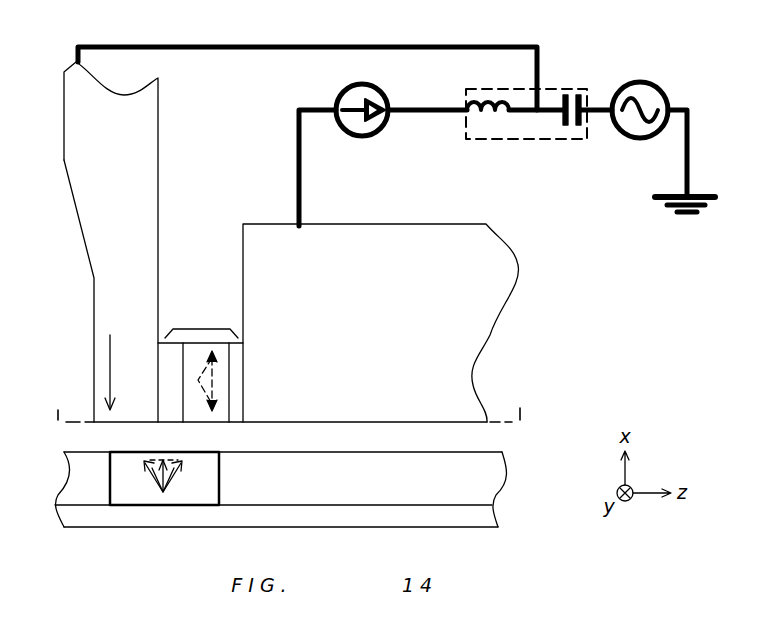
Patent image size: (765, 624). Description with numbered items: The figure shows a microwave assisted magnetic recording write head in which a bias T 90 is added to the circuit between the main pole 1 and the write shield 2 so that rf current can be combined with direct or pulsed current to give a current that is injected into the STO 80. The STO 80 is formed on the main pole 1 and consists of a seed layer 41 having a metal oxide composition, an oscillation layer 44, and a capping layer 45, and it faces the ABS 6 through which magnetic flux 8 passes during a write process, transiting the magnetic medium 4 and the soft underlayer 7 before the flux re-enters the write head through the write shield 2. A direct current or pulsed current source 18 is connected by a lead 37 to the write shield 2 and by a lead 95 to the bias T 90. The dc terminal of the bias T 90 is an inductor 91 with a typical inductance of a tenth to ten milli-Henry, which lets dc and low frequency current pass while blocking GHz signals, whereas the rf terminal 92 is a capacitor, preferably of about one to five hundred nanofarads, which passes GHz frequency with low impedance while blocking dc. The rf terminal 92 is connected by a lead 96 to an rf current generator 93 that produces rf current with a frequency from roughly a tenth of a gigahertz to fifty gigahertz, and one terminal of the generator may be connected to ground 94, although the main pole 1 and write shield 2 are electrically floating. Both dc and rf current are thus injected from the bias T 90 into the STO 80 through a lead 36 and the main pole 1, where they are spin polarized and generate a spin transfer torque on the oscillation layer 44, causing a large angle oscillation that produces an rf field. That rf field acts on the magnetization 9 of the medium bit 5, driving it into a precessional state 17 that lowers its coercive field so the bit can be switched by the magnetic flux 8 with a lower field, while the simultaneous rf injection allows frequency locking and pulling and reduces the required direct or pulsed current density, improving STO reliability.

The main pole 1 is at (92, 222).
The write shield 2 is at (470, 350).
The magnetic medium 4 is at (500, 475).
The medium bit 5 is at (173, 495).
The ABS 6 is at (290, 403).
The soft underlayer 7 is at (490, 512).
The magnetic flux 8 is at (110, 362).
The magnetization 9 is at (151, 494).
The precessional state 17 is at (188, 480).
The direct current or pulsed current source 18 is at (340, 95).
The lead 36 is at (237, 46).
The lead 37 is at (299, 165).
The seed layer 41 is at (173, 414).
The oscillation layer 44 is at (199, 414).
The capping layer 45 is at (238, 414).
The STO 80 is at (207, 310).
The bias T 90 is at (478, 140).
The inductor 91 is at (488, 112).
The rf terminal 92 is at (567, 140).
The rf current generator 93 is at (642, 140).
The ground 94 is at (687, 214).
The lead 95 is at (442, 105).
The lead 96 is at (585, 110).